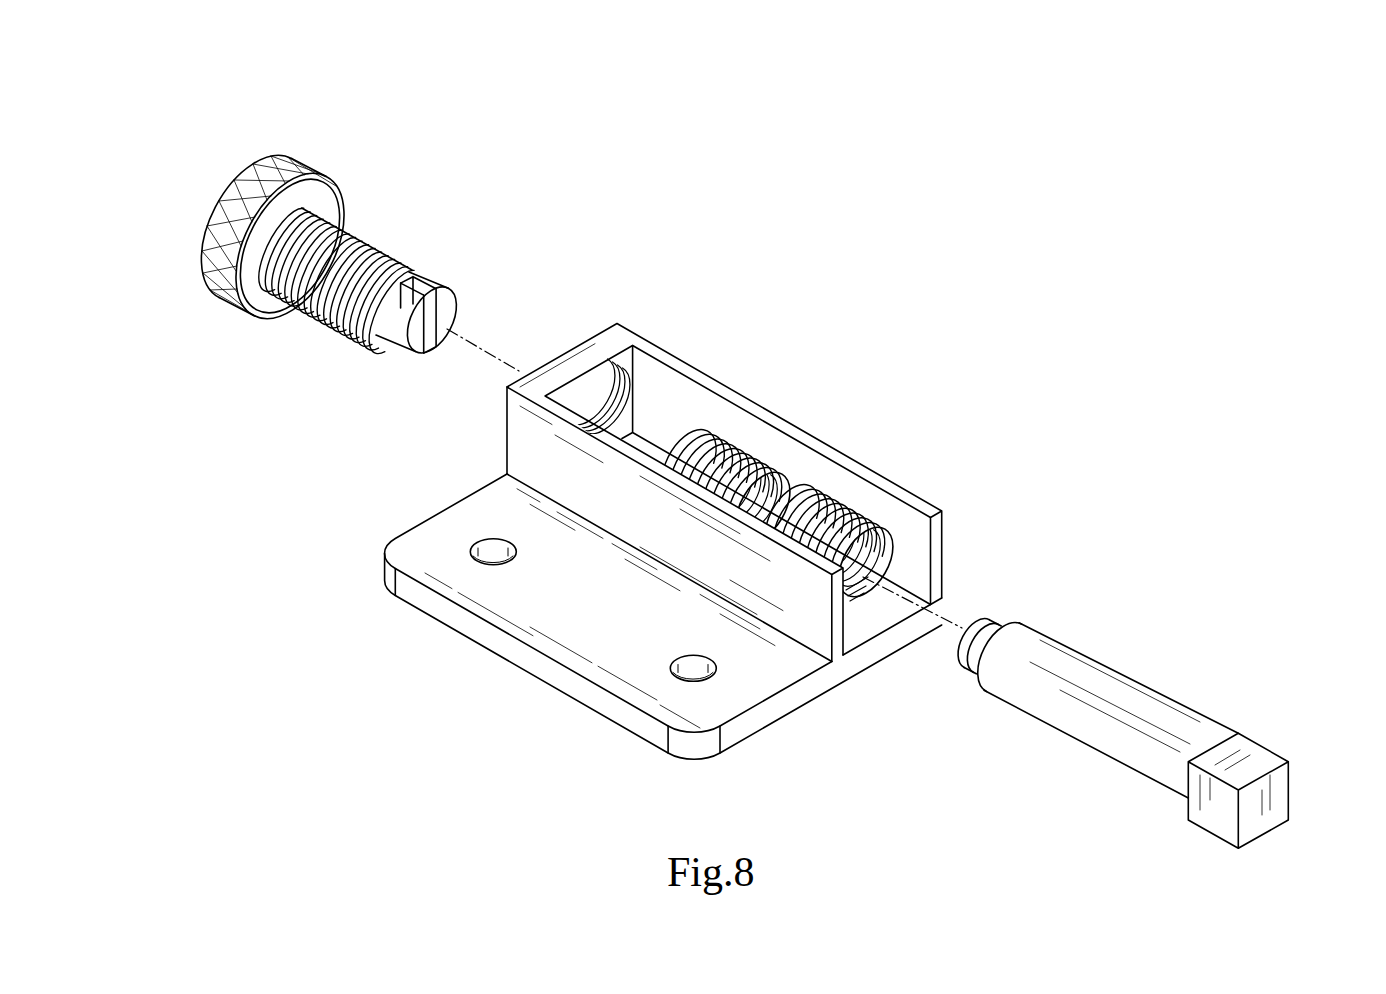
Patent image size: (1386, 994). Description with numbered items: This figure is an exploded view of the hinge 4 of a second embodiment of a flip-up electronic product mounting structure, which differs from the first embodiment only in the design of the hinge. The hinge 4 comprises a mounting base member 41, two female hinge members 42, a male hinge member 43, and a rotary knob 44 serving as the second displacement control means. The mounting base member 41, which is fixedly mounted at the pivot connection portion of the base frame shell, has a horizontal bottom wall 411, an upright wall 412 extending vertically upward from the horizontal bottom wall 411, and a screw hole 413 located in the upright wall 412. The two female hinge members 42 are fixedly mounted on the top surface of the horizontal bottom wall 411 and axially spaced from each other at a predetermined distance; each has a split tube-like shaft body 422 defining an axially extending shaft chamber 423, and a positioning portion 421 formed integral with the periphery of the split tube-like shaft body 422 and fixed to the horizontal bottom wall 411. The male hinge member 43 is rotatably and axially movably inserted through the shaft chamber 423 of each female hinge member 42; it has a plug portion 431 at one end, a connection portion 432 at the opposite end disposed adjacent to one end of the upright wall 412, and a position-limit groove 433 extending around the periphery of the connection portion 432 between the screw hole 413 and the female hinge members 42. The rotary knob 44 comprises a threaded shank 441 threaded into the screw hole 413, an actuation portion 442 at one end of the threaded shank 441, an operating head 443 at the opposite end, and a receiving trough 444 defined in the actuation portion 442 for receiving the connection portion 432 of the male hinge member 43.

The hinge 4 is at (722, 365).
The mounting base member 41 is at (433, 520).
The horizontal bottom wall 411 is at (832, 675).
The upright wall 412 is at (582, 357).
The screw hole 413 is at (615, 385).
The female hinge member 42 is at (747, 432).
The positioning portion 421 is at (858, 605).
The split tube-like shaft body 422 is at (768, 455).
The axially extending shaft chamber 423 is at (775, 480).
The male hinge member 43 is at (1147, 690).
The plug portion 431 is at (1250, 757).
The connection portion 432 is at (985, 625).
The position-limit groove 433 is at (978, 633).
The rotary knob 44 is at (270, 146).
The threaded shank 441 is at (322, 295).
The actuation portion 442 is at (393, 325).
The operating head 443 is at (223, 230).
The receiving trough 444 is at (418, 283).